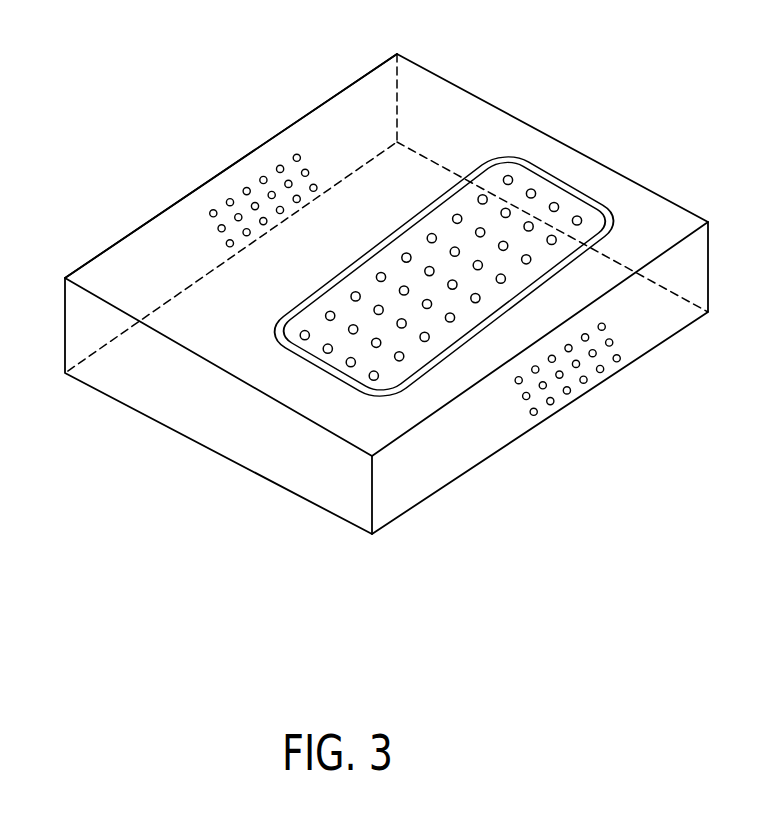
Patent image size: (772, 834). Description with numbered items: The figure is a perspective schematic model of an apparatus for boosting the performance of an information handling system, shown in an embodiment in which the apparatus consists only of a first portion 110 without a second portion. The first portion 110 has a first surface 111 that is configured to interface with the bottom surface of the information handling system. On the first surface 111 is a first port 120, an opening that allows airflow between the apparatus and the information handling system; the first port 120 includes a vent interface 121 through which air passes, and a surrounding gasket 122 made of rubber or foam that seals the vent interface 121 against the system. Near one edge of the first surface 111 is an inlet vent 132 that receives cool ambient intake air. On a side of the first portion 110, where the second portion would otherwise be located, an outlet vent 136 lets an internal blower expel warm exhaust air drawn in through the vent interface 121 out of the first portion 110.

The first portion 110 is at (64, 399).
The first surface 111 is at (116, 258).
The first port 120 is at (596, 225).
The vent interface 121 is at (481, 194).
The gasket 122 is at (568, 186).
The inlet vent 132 is at (226, 151).
The outlet vent 136 is at (582, 370).